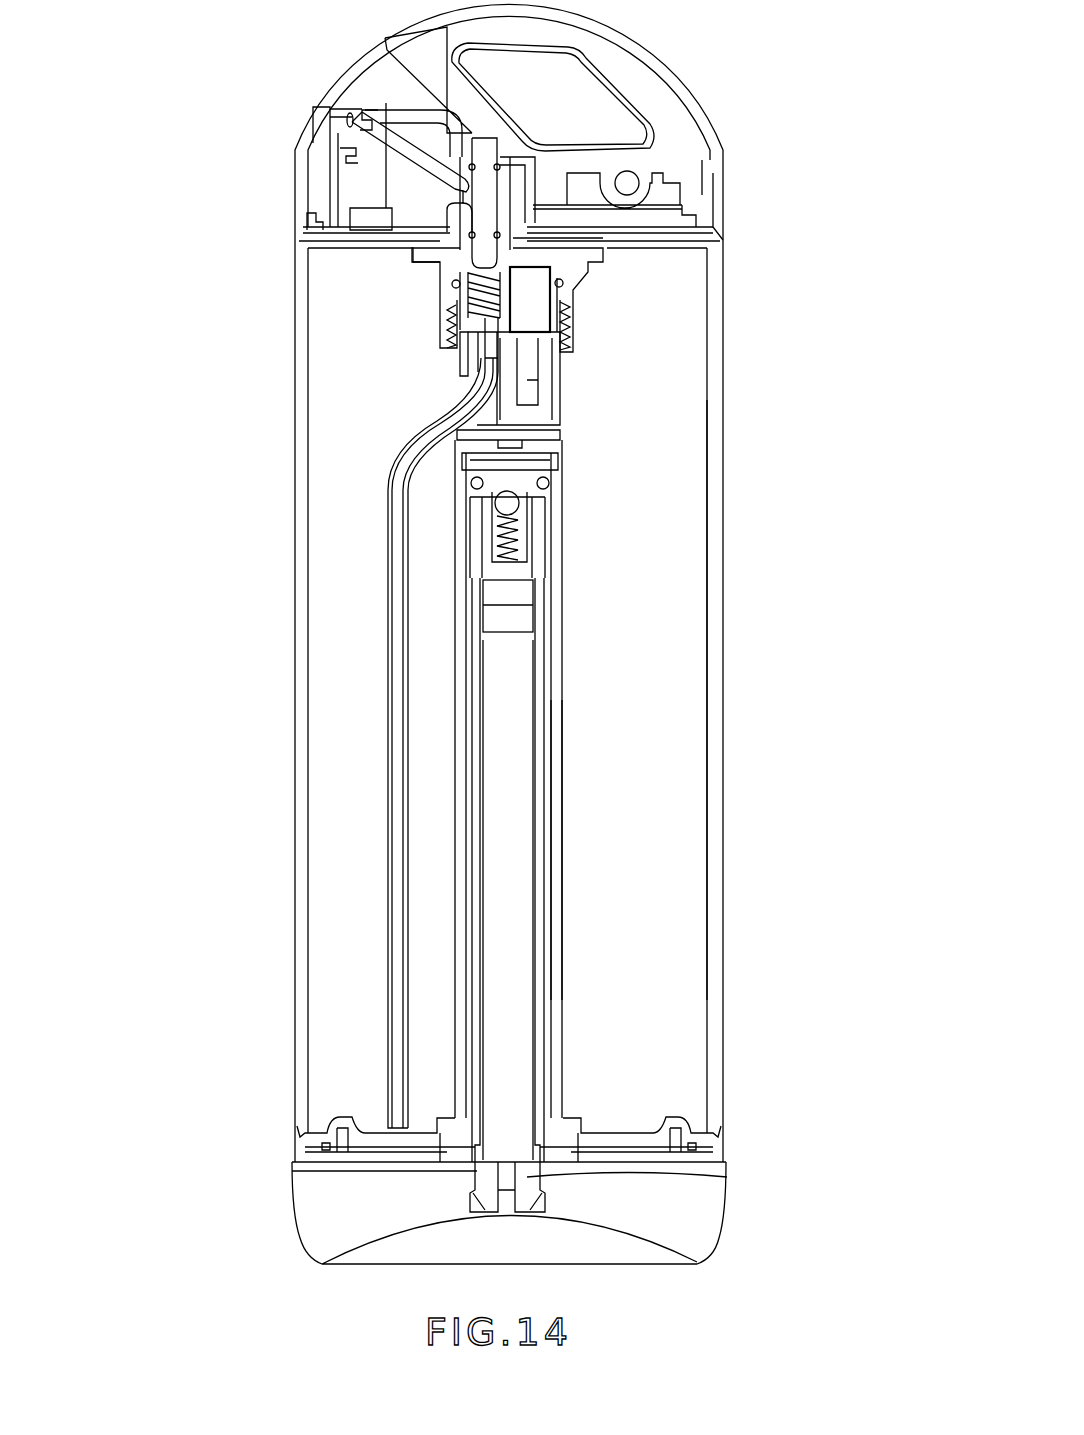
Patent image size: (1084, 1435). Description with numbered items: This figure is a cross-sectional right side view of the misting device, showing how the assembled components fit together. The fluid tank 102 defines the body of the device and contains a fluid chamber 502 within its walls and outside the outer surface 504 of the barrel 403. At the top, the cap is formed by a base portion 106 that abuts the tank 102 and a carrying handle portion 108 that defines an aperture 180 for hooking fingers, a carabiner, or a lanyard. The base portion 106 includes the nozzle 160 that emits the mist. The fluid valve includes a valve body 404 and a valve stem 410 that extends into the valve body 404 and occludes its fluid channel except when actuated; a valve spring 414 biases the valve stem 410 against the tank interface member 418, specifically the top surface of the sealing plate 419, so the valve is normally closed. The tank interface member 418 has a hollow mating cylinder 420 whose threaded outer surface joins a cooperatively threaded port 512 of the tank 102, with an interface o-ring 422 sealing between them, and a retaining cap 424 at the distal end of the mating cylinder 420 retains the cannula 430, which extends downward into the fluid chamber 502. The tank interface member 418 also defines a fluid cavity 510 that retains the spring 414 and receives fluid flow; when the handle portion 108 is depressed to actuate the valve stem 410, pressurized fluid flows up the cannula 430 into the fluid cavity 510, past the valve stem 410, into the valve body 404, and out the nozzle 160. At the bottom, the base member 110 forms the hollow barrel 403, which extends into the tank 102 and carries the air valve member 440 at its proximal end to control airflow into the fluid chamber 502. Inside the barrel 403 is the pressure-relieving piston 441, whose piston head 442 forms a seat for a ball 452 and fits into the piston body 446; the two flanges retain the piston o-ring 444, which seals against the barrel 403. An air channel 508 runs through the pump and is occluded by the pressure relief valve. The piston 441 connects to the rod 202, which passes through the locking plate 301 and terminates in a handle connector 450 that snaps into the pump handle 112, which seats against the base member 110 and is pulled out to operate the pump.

The fluid tank 102 is at (724, 537).
The base portion 106 is at (338, 84).
The carrying handle portion 108 is at (608, 24).
The base member 110 is at (724, 1144).
The pump handle 112 is at (718, 1242).
The nozzle 160 is at (324, 123).
The aperture 180 is at (596, 88).
The rod 202 is at (543, 689).
The locking plate 301 is at (318, 1160).
The barrel 403 is at (556, 925).
The valve body 404 is at (364, 168).
The valve stem 410 is at (408, 284).
The valve spring 414 is at (466, 296).
The tank interface member 418 is at (485, 255).
The sealing plate 419 is at (709, 240).
The mating cylinder 420 is at (460, 390).
The interface o-ring 422 is at (566, 284).
The retaining cap 424 is at (462, 393).
The cannula 430 is at (396, 478).
The air valve member 440 is at (554, 431).
The pressure-relieving piston 441 is at (556, 561).
The piston head 442 is at (544, 466).
The piston o-ring 444 is at (472, 486).
The piston body 446 is at (542, 571).
The handle connector 450 is at (526, 1183).
The ball 452 is at (516, 508).
The fluid chamber 502 is at (679, 688).
The outer surface 504 is at (562, 898).
The air channel 508 is at (514, 788).
The fluid cavity 510 is at (502, 292).
The port 512 is at (598, 264).